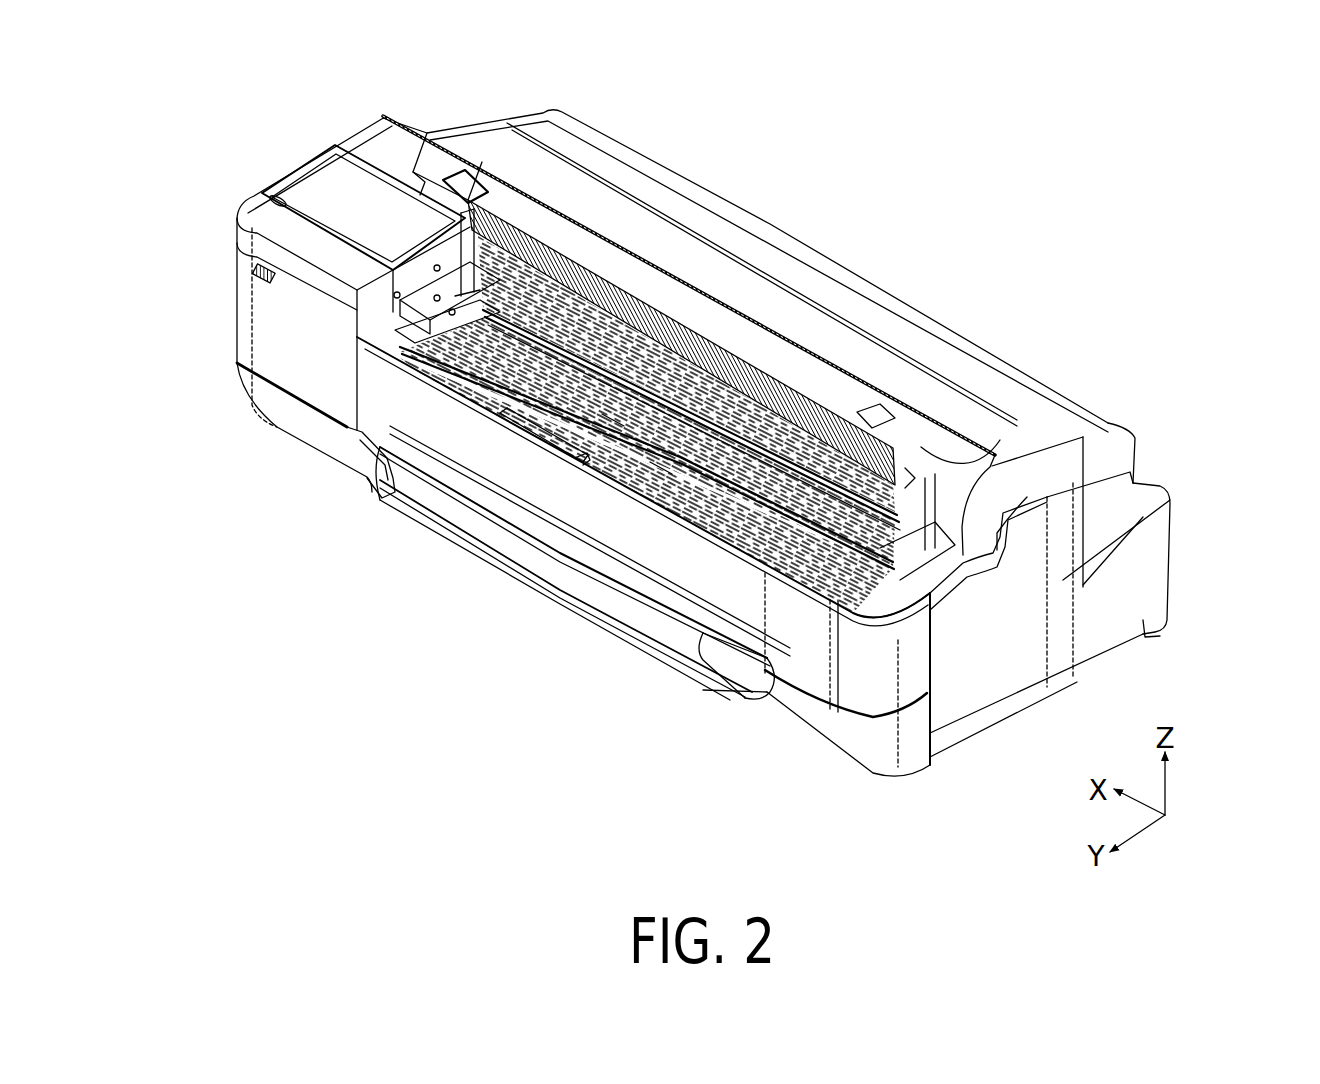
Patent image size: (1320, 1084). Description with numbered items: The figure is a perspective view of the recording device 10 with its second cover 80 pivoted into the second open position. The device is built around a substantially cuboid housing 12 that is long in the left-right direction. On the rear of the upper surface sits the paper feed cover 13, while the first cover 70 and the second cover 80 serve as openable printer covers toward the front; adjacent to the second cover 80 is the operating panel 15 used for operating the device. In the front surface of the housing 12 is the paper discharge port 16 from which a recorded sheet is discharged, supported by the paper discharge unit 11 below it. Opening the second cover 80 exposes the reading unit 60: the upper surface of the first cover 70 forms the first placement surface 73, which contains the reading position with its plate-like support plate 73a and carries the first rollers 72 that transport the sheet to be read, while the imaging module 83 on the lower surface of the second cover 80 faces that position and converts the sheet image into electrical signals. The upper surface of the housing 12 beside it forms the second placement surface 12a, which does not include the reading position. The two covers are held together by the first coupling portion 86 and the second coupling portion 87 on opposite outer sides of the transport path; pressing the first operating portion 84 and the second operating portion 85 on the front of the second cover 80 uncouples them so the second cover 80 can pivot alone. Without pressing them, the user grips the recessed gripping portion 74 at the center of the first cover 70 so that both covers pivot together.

The recording device 10 is at (1060, 244).
The paper discharge unit 11 is at (545, 598).
The housing 12 is at (1145, 560).
The second placement surface 12a is at (1050, 445).
The paper feed cover 13 is at (640, 222).
The operating panel 15 is at (340, 195).
The paper discharge port 16 is at (548, 549).
The reading unit 60 is at (935, 570).
The first cover 70 is at (870, 615).
The first rollers 72 is at (793, 460).
The first placement surface 73 is at (760, 500).
The support plate 73a is at (612, 420).
The gripping portion 74 is at (527, 443).
The second cover 80 is at (1000, 437).
The imaging module 83 is at (647, 333).
The first operating portion 84 is at (921, 447).
The second operating portion 85 is at (472, 190).
The first coupling portion 86 is at (915, 480).
The second coupling portion 87 is at (425, 211).